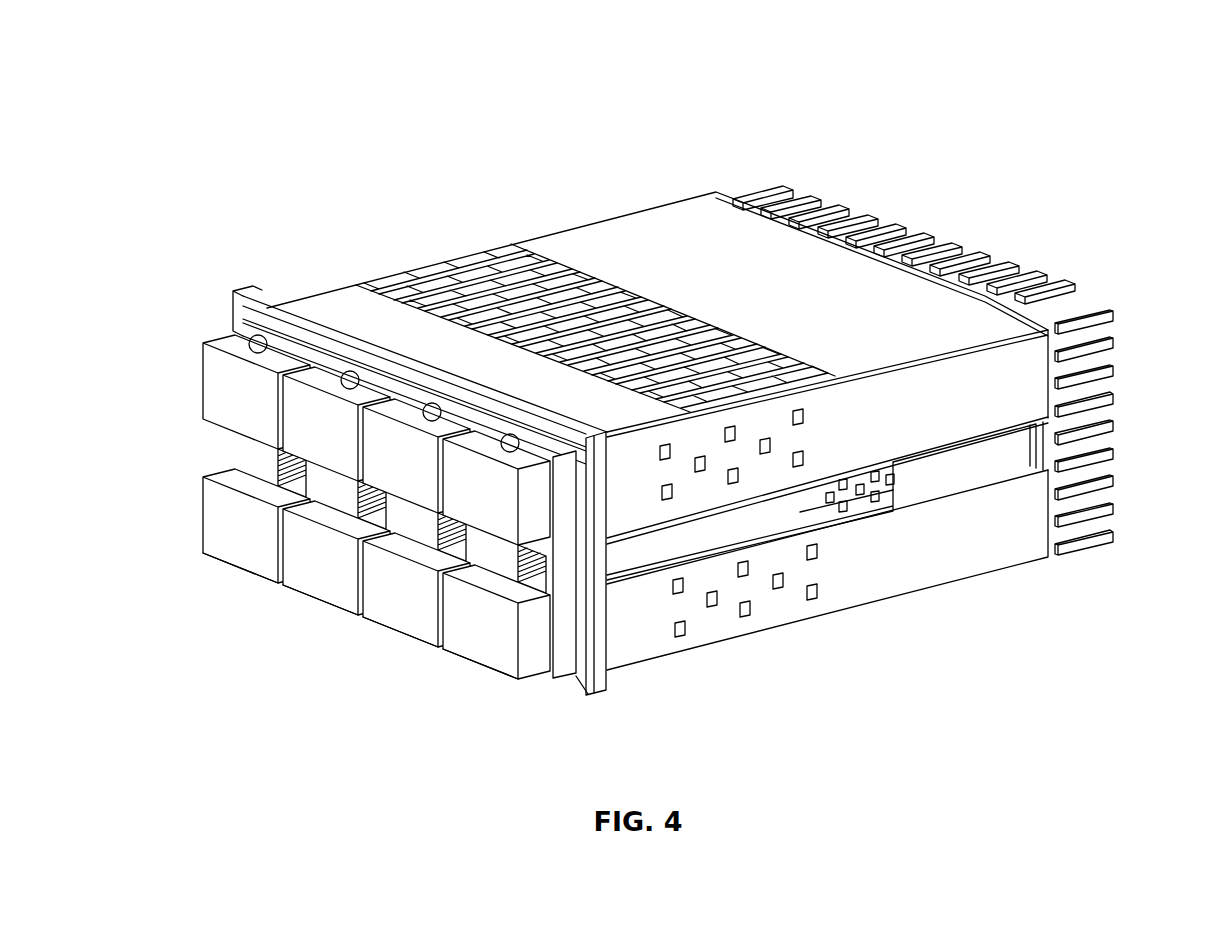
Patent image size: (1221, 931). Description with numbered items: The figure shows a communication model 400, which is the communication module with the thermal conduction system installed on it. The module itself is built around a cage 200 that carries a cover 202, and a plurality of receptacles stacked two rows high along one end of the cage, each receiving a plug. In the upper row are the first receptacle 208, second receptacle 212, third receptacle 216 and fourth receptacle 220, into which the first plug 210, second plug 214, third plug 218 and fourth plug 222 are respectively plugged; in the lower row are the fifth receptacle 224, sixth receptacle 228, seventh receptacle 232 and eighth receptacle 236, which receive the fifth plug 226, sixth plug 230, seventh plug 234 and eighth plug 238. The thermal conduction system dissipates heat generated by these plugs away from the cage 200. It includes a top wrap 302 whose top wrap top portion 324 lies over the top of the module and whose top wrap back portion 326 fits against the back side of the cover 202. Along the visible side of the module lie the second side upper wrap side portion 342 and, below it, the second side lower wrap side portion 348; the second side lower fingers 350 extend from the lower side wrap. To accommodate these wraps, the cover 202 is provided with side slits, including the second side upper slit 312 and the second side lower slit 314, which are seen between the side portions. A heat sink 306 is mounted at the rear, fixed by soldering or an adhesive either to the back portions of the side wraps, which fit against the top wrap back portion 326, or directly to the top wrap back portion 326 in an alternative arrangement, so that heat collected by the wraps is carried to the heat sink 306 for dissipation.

The communication model 400 is at (311, 113).
The top wrap 302 is at (639, 194).
The heat sink 306 is at (898, 234).
The top wrap top portion 324 is at (780, 296).
The top wrap back portion 326 is at (1055, 451).
The second side upper wrap side portion 342 is at (990, 411).
The cover 202 is at (990, 477).
The second side lower wrap side portion 348 is at (1000, 545).
The second side upper slit 312 is at (775, 500).
The second side lower slit 314 is at (787, 518).
The second side lower fingers 350 is at (555, 548).
The cage 200 is at (568, 651).
The first receptacle 208 is at (258, 328).
The first plug 210 is at (213, 395).
The second receptacle 212 is at (347, 380).
The third receptacle 216 is at (430, 413).
The fourth receptacle 220 is at (505, 445).
The second plug 214 is at (317, 440).
The third plug 218 is at (393, 473).
The fourth plug 222 is at (458, 514).
The fifth plug 226 is at (237, 550).
The sixth plug 230 is at (330, 583).
The seventh plug 234 is at (405, 620).
The eighth plug 238 is at (485, 648).
The fifth receptacle 224 is at (235, 587).
The sixth receptacle 228 is at (326, 616).
The seventh receptacle 232 is at (398, 647).
The eighth receptacle 236 is at (500, 680).